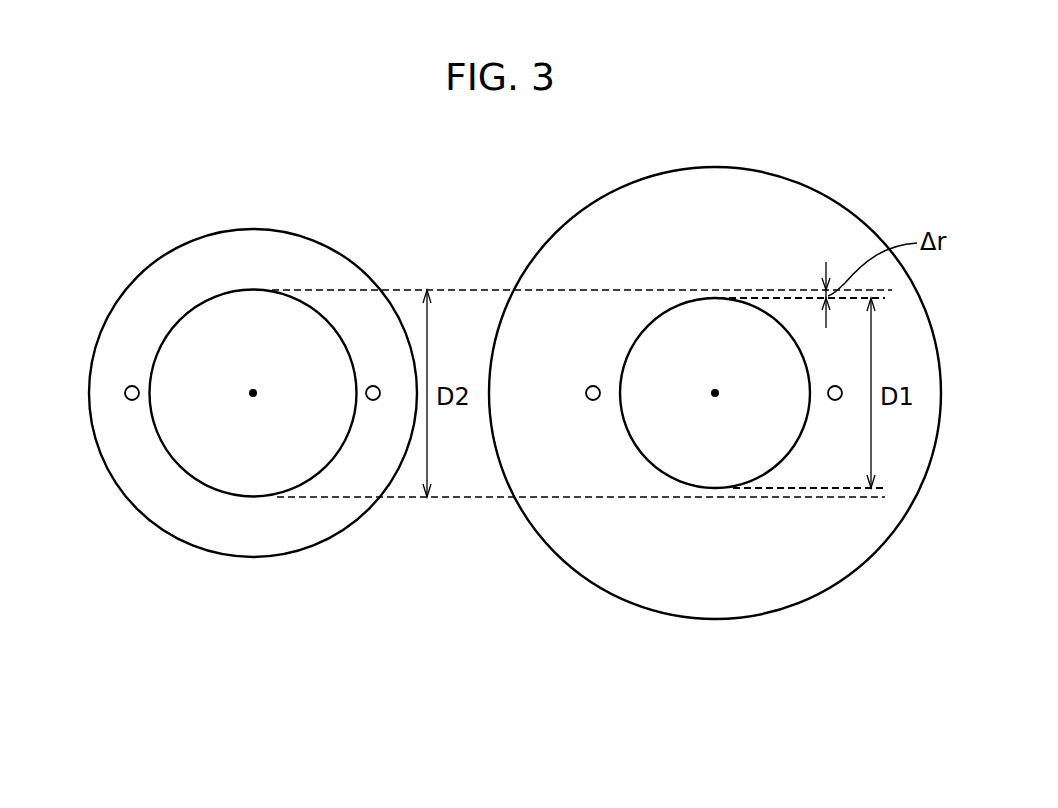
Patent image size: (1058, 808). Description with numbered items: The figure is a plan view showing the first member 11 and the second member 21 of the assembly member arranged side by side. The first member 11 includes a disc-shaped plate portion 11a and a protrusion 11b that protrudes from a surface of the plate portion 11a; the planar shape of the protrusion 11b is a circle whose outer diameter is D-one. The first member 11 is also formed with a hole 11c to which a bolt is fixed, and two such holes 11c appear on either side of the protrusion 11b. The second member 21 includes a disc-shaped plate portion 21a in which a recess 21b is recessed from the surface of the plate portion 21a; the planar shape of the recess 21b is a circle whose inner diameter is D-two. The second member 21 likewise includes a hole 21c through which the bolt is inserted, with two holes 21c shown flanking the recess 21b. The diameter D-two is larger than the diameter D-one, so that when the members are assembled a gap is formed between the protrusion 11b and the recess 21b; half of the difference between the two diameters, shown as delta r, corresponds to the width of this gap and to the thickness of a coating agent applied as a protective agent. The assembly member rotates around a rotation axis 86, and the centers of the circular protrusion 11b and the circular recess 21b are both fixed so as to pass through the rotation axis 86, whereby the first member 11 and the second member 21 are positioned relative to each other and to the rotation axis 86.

The first member 11 is at (715, 410).
The plate portion 11a is at (776, 593).
The protrusion 11b is at (707, 472).
The hole 11c is at (590, 403).
The second member 21 is at (233, 407).
The plate portion 21a is at (278, 542).
The recess 21b is at (188, 448).
The hole 21c is at (128, 400).
The rotation axis 86 is at (253, 393).